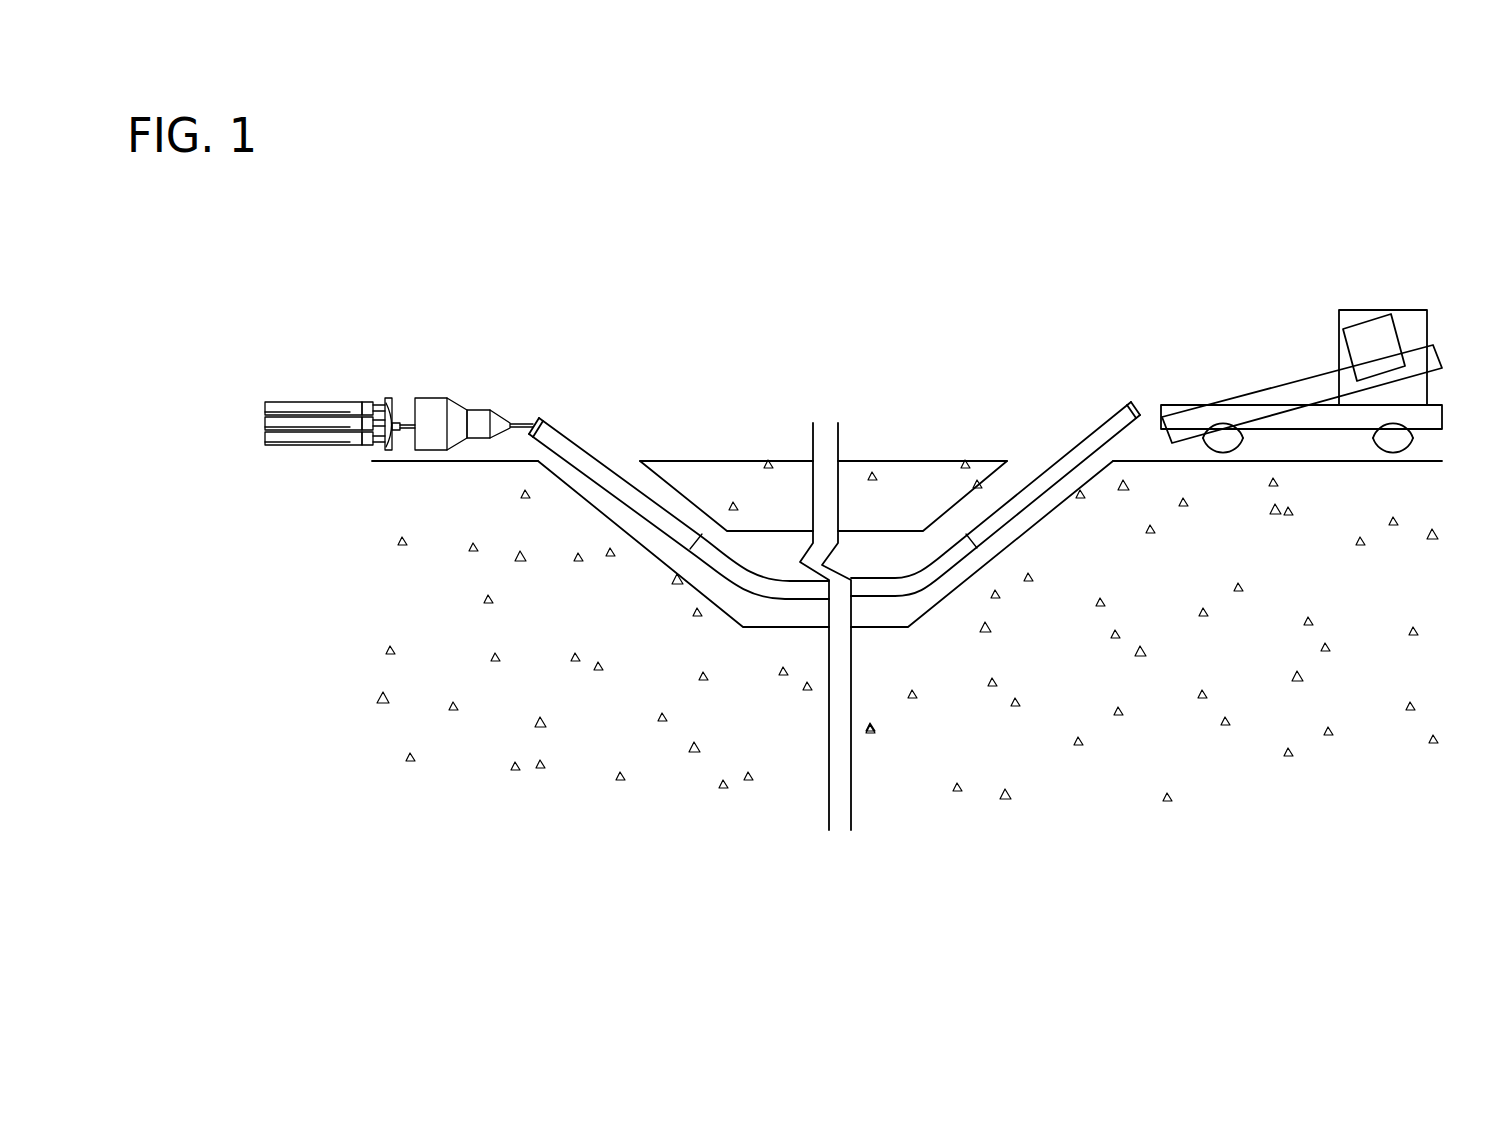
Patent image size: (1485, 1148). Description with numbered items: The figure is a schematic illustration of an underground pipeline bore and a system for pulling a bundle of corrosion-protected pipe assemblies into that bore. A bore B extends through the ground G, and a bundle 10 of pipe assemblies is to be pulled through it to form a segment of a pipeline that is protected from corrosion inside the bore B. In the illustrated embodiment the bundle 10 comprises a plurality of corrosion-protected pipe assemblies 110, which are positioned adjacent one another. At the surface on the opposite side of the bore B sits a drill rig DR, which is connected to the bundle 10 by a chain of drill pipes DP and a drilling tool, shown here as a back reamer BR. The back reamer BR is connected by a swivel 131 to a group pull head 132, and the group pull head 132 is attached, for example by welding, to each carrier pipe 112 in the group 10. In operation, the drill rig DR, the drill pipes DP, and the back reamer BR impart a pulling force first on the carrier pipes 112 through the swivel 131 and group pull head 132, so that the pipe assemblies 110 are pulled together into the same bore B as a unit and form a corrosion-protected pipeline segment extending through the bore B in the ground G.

The bundle of pipe assemblies 10 is at (308, 446).
The corrosion-protected pipe assembly 110 is at (280, 441).
The carrier pipe 112 is at (385, 447).
The swivel 131 is at (402, 418).
The group pull head 132 is at (390, 398).
The back reamer BR is at (472, 400).
The ground G is at (911, 468).
The bore B is at (1007, 468).
The drill pipe DP is at (752, 592).
The drill rig DR is at (1397, 307).